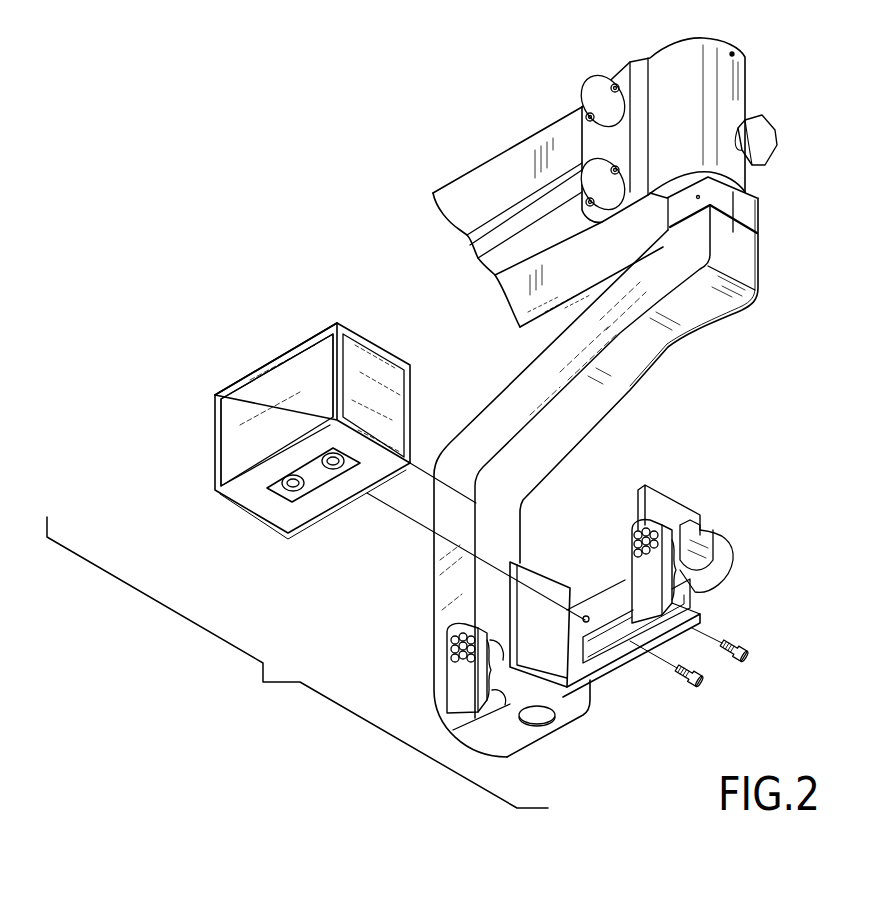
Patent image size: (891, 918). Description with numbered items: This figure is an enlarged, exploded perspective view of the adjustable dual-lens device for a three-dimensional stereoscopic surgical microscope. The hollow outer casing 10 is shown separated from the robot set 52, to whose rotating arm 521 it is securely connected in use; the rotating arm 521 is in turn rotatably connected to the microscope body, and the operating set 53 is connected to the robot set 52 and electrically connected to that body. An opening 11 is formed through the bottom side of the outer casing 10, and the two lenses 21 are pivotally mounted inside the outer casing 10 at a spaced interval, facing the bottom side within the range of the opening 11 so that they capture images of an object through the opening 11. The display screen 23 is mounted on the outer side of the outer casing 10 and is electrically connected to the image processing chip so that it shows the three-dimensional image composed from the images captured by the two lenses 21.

The outer casing 10 is at (262, 343).
The opening 11 is at (324, 482).
The lenses 21 is at (280, 490).
The display screen 23 is at (230, 435).
The robot set 52 is at (485, 136).
The rotating arm 521 is at (623, 373).
The operating set 53 is at (740, 573).